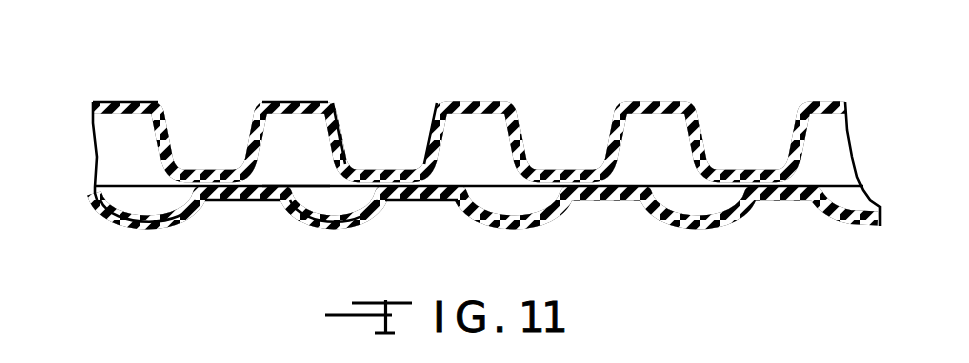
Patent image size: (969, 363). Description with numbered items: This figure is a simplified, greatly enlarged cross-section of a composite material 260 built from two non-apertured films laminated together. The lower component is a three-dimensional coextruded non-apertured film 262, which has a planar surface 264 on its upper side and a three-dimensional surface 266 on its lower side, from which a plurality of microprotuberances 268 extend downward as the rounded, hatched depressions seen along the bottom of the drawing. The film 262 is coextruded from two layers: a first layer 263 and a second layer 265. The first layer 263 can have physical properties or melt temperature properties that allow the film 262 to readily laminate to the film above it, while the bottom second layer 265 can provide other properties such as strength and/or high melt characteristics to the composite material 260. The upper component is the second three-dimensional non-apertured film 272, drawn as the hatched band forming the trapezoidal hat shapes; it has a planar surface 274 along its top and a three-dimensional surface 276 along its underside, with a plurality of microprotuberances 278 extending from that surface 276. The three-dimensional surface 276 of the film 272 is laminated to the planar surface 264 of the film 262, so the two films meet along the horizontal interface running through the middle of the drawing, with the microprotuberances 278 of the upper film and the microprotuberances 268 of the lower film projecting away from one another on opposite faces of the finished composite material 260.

The composite material 260 is at (101, 94).
The three-dimensional coextruded non-apertured film 262 is at (92, 194).
The first layer 263 is at (398, 200).
The planar surface 264 is at (268, 183).
The second layer 265 is at (338, 229).
The three-dimensional surface 266 is at (243, 201).
The microprotuberances 268 is at (150, 229).
The second three-dimensional non-apertured film 272 is at (130, 100).
The planar surface 274 is at (288, 100).
The three-dimensional surface 276 is at (329, 100).
The microprotuberances 278 is at (438, 153).